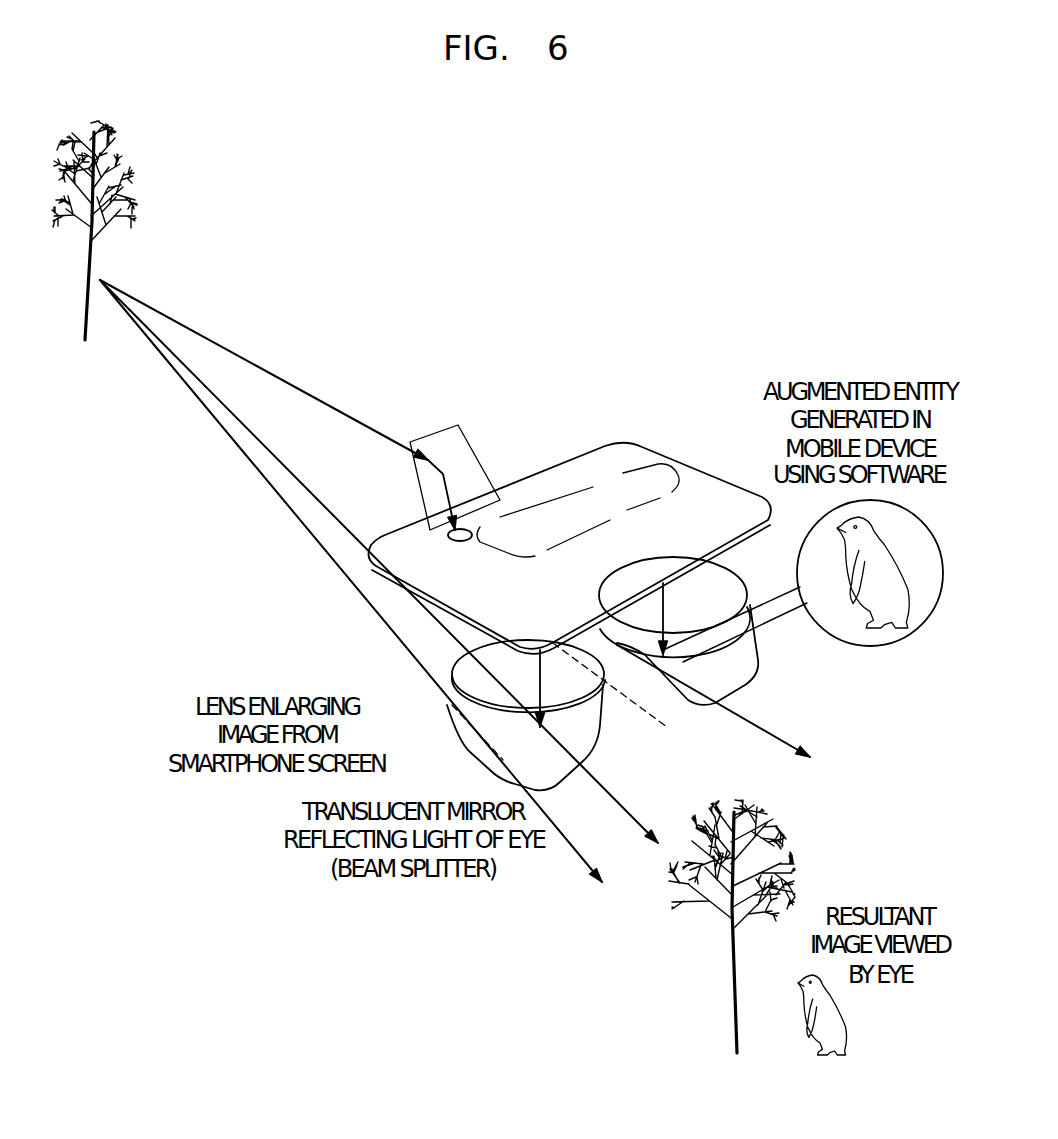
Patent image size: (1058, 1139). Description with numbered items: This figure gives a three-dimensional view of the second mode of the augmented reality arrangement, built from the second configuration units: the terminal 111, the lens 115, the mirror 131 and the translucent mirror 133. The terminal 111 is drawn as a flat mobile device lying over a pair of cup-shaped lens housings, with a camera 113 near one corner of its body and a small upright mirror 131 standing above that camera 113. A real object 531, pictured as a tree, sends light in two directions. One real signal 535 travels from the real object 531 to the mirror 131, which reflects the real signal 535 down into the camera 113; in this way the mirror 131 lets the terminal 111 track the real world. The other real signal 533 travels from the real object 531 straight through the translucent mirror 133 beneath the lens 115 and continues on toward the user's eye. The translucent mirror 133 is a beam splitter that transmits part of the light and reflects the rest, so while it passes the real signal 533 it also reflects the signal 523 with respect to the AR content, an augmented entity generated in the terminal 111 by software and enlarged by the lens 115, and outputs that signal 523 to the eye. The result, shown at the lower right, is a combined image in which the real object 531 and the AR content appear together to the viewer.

The terminal 111 is at (697, 468).
The camera 113 is at (447, 537).
The lens 115 is at (443, 700).
The mirror 131 is at (483, 463).
The translucent mirror 133 is at (472, 740).
The signal with respect to the AR content 523 is at (623, 805).
The real object 531 is at (130, 200).
The real signal 533 is at (268, 488).
The real signal 535 is at (272, 372).